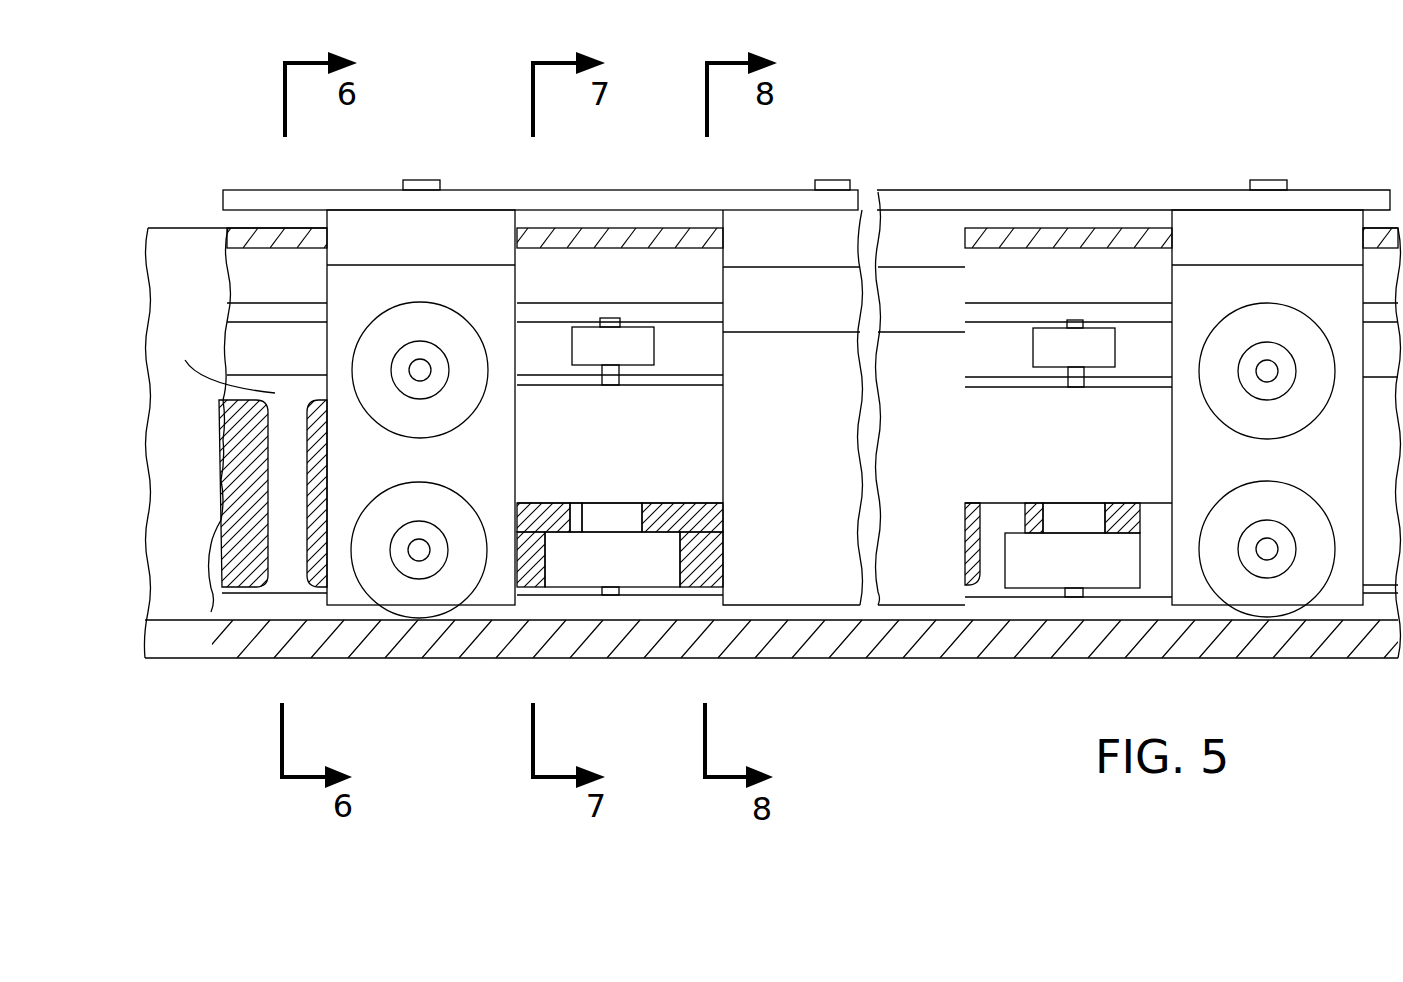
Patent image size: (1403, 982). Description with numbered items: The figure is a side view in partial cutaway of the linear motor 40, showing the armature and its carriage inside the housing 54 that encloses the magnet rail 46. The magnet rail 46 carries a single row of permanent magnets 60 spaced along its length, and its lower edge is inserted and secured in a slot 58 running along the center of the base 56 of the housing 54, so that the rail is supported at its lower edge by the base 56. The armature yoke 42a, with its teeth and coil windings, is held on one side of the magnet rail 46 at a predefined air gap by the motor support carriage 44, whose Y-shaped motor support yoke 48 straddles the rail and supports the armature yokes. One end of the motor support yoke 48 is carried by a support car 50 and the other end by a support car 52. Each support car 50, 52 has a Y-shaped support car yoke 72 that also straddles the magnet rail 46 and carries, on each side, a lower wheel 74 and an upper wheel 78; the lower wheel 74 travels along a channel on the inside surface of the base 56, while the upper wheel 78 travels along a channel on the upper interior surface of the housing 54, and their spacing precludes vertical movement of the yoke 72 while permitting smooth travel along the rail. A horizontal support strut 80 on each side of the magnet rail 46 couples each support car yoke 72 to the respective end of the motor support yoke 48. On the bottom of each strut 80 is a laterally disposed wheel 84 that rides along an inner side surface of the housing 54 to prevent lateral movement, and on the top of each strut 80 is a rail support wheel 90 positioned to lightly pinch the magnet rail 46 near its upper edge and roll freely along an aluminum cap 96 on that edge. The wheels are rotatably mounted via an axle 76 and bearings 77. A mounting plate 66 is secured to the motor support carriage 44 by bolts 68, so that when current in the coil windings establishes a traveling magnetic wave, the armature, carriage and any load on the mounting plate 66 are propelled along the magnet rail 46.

The linear motor 40 is at (193, 160).
The armature yoke 42a is at (759, 585).
The motor support carriage 44 is at (893, 680).
The magnet rail 46 is at (240, 363).
The motor support yoke 48 is at (767, 290).
The support car 50 is at (566, 686).
The support car 52 is at (1091, 686).
The housing 54 is at (182, 235).
The base 56 is at (378, 640).
The slot 58 is at (1117, 608).
The permanent magnets 60 is at (245, 565).
The mounting plate 66 is at (1003, 190).
The bolts 68 is at (422, 180).
The support car yoke 72 is at (474, 283).
The lower wheel 74 is at (443, 602).
The axle 76 is at (425, 373).
The bearings 77 is at (610, 385).
The upper wheel 78 is at (390, 305).
The horizontal support strut 80 is at (700, 465).
The laterally disposed wheel 84 is at (650, 570).
The rail support wheel 90 is at (585, 340).
The cap 96 is at (228, 340).